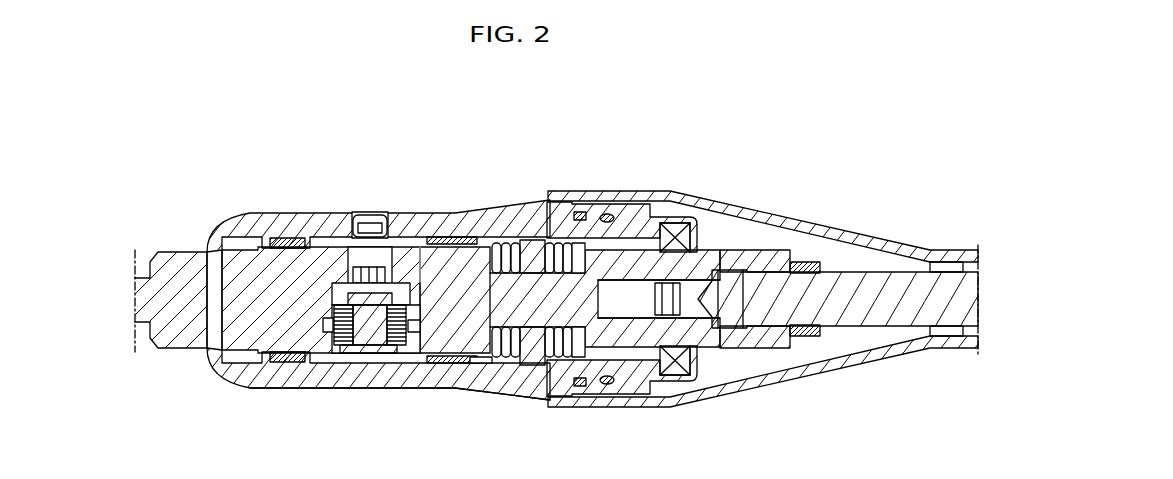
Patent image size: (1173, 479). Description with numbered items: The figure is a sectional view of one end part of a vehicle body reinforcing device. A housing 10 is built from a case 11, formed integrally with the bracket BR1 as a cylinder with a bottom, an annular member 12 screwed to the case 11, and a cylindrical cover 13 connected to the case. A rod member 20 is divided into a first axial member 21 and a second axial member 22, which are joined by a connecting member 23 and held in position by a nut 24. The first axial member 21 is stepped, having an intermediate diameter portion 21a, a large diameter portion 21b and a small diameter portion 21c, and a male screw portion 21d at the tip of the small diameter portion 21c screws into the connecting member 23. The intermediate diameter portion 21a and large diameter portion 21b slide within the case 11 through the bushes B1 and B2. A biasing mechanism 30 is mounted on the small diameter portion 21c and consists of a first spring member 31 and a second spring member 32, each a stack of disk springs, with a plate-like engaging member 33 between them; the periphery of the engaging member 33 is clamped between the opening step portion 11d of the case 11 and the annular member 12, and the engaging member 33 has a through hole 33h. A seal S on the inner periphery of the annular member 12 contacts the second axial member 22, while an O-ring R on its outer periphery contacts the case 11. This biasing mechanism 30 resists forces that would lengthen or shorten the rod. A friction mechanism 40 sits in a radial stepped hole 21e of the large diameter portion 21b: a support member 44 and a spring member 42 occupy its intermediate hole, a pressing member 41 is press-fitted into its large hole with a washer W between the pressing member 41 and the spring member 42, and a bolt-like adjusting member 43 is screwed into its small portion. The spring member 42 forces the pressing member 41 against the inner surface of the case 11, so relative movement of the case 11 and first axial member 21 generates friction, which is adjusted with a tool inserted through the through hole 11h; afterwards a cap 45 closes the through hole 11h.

The housing 10 is at (248, 211).
The case 11 is at (262, 378).
The opening step portion 11d is at (530, 385).
The through hole 11h is at (372, 214).
The annular member 12 is at (652, 396).
The cylindrical cover 13 is at (770, 384).
The rod member 20 is at (850, 268).
The first axial member 21 is at (222, 352).
The intermediate diameter portion 21a is at (290, 364).
The large diameter portion 21b is at (490, 340).
The small diameter portion 21c is at (600, 322).
The male screw portion 21d is at (662, 300).
The stepped hole 21e is at (420, 360).
The second axial member 22 is at (913, 310).
The connecting member 23 is at (712, 342).
The nut 24 is at (806, 336).
The biasing mechanism 30 is at (505, 242).
The first spring member 31 is at (506, 358).
The second spring member 32 is at (560, 358).
The engaging member 33 is at (534, 366).
The through hole 33h is at (578, 210).
The friction mechanism 40 is at (356, 266).
The pressing member 41 is at (342, 346).
The spring member 42 is at (402, 346).
The adjusting member 43 is at (380, 266).
The support member 44 is at (372, 352).
The cap 45 is at (376, 228).
The washer W is at (368, 346).
The bush B1 is at (287, 237).
The bush B2 is at (452, 237).
The bracket BR1 is at (150, 266).
The O-ring R is at (611, 214).
The seal S is at (690, 235).